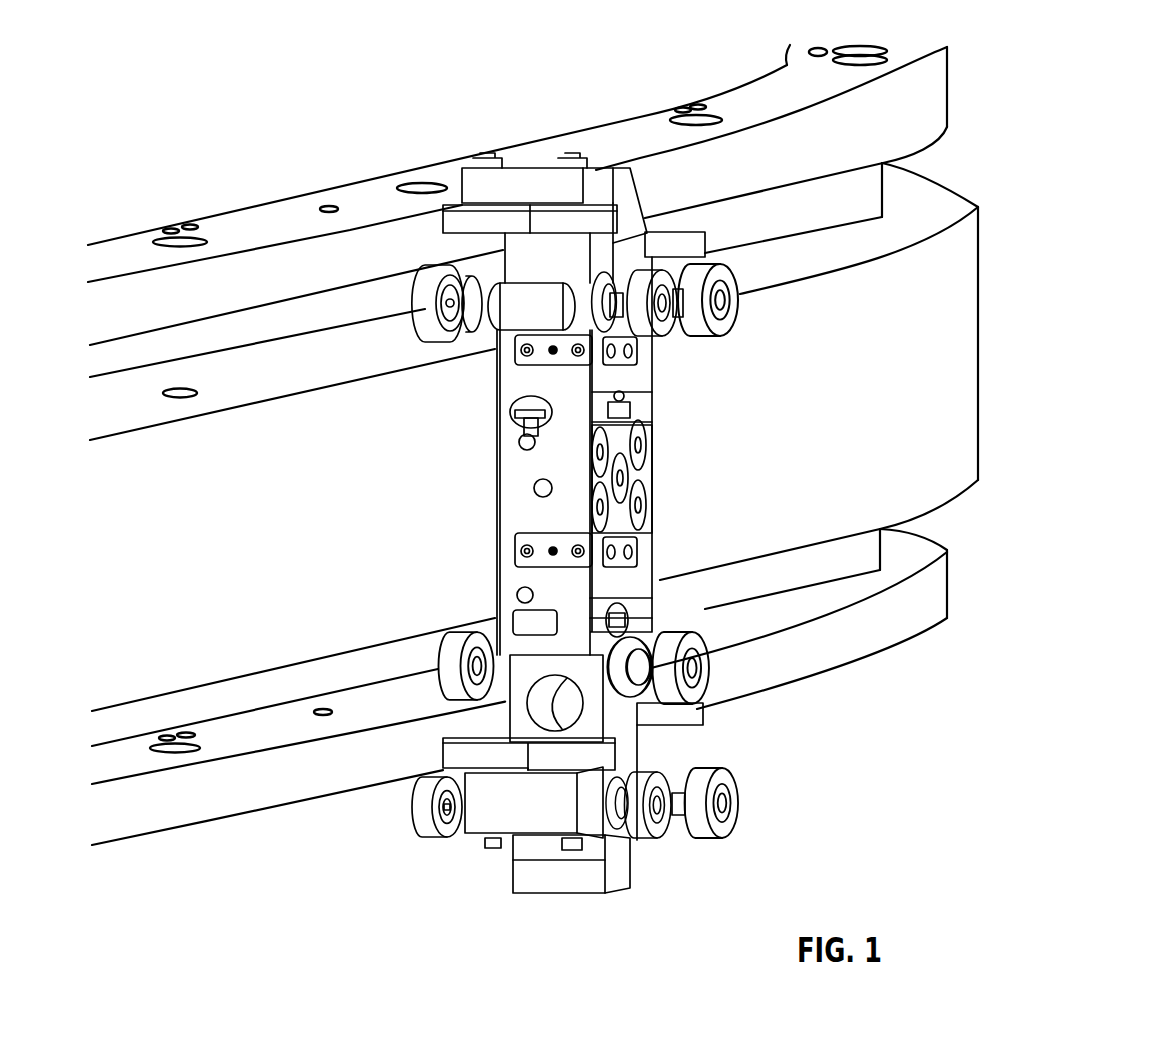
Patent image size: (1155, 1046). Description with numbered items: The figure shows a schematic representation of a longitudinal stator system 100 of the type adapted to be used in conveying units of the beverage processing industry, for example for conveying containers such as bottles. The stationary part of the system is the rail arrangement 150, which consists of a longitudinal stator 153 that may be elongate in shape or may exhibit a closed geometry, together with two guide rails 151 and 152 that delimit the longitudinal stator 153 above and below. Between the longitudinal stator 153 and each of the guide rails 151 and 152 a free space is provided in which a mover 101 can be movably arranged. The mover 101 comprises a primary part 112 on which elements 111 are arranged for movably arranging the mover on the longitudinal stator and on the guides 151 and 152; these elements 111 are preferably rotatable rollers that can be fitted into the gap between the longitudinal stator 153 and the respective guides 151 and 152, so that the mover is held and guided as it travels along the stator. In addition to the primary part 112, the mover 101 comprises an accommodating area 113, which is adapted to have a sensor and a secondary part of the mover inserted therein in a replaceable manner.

The longitudinal stator system 100 is at (1064, 130).
The mover 101 is at (682, 867).
The elements 111 is at (745, 800).
The primary part 112 is at (532, 887).
The accommodating area 113 is at (653, 447).
The longitudinal stator with guide rails 150 is at (980, 628).
The guide rail 151 is at (917, 633).
The guide rail 152 is at (944, 88).
The longitudinal stator 153 is at (960, 362).